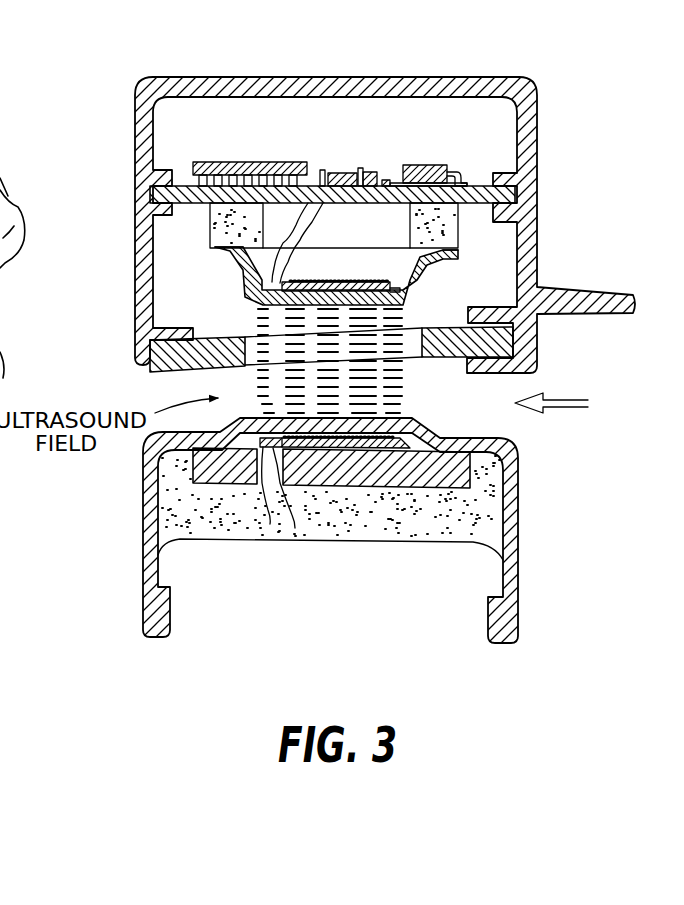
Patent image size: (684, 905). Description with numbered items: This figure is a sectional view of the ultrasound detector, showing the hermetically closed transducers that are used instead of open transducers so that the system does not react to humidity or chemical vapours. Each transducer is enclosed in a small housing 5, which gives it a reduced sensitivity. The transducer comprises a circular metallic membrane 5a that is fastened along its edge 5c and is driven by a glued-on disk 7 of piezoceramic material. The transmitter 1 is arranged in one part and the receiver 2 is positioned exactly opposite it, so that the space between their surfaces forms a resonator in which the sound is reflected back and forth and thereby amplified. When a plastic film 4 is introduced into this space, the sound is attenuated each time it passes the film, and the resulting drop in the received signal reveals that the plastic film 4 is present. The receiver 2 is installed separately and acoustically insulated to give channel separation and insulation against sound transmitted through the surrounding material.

The transmitter 1 is at (447, 423).
The receiver 2 is at (466, 149).
The plastic film 4 is at (596, 406).
The housing 5 is at (515, 332).
The metallic membrane 5a is at (242, 292).
The edge 5c is at (240, 249).
The disk of piezoceramic material 7 is at (440, 240).